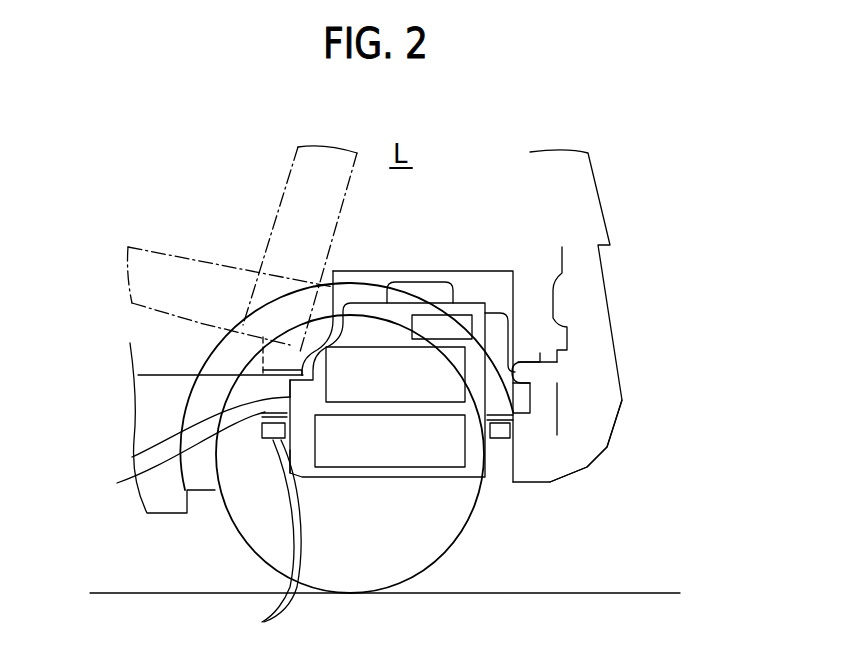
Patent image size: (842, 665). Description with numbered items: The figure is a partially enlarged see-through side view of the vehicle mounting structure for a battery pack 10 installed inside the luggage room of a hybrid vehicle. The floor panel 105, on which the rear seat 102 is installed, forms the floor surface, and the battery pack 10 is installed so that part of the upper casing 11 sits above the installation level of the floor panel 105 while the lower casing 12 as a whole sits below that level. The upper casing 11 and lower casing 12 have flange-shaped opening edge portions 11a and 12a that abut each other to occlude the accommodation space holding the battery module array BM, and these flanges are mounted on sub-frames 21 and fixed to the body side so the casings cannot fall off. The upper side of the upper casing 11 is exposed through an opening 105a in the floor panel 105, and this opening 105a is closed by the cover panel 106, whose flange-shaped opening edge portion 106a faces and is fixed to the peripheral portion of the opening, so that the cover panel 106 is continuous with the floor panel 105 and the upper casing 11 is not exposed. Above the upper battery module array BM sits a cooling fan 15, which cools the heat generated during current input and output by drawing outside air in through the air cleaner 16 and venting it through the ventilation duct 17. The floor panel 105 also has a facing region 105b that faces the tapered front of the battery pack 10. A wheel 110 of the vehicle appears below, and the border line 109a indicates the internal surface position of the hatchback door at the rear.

The battery pack 10 is at (489, 286).
The upper casing 11 is at (215, 412).
The opening edge portion 11a is at (132, 457).
The lower casing 12 is at (290, 450).
The opening edge portion 12a is at (135, 482).
The cooling fan 15 is at (437, 315).
The air cleaner 16 is at (400, 282).
The ventilation duct 17 is at (530, 400).
The sub-frame 21 is at (272, 440).
The rear seat 102 is at (276, 202).
The floor panel 105 is at (572, 350).
The opening 105a is at (537, 378).
The facing region 105b is at (558, 427).
The cover panel 106 is at (465, 271).
The opening edge portion 106a is at (305, 355).
The border line 109a is at (556, 285).
The wheel 110 is at (440, 562).
The battery module array BM is at (259, 539).